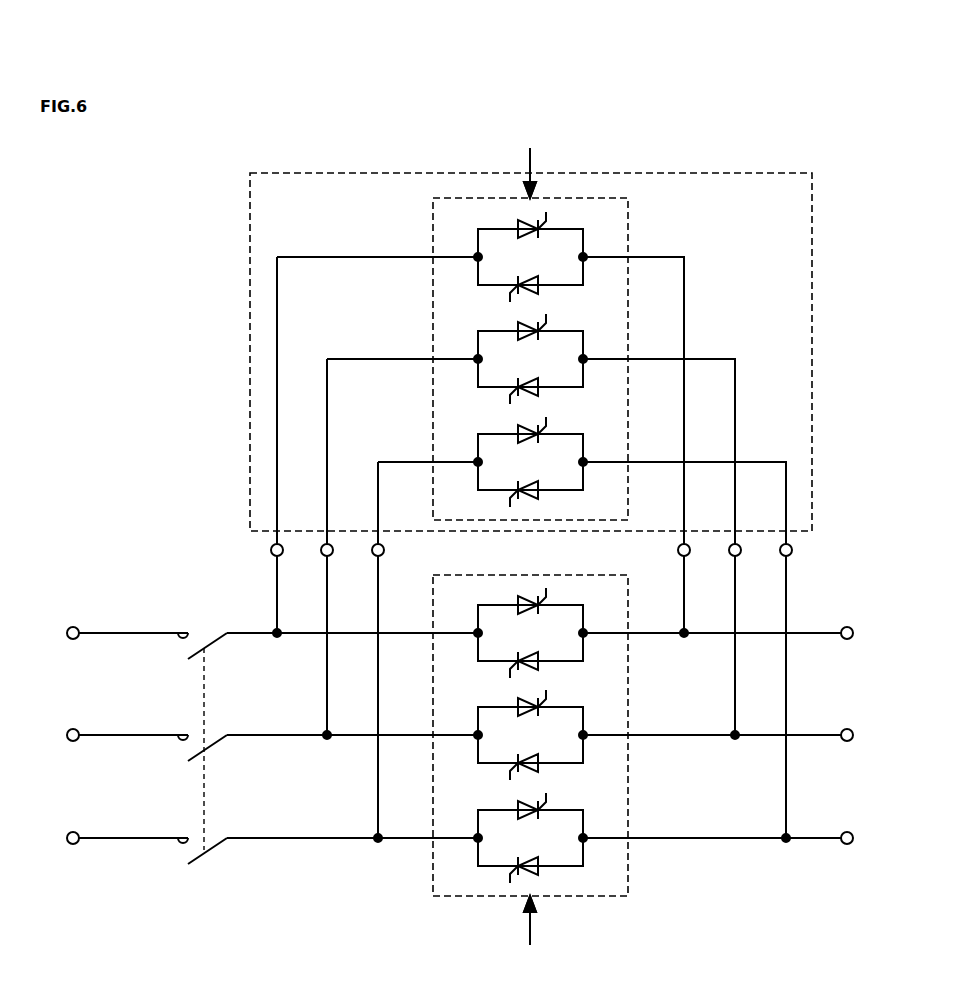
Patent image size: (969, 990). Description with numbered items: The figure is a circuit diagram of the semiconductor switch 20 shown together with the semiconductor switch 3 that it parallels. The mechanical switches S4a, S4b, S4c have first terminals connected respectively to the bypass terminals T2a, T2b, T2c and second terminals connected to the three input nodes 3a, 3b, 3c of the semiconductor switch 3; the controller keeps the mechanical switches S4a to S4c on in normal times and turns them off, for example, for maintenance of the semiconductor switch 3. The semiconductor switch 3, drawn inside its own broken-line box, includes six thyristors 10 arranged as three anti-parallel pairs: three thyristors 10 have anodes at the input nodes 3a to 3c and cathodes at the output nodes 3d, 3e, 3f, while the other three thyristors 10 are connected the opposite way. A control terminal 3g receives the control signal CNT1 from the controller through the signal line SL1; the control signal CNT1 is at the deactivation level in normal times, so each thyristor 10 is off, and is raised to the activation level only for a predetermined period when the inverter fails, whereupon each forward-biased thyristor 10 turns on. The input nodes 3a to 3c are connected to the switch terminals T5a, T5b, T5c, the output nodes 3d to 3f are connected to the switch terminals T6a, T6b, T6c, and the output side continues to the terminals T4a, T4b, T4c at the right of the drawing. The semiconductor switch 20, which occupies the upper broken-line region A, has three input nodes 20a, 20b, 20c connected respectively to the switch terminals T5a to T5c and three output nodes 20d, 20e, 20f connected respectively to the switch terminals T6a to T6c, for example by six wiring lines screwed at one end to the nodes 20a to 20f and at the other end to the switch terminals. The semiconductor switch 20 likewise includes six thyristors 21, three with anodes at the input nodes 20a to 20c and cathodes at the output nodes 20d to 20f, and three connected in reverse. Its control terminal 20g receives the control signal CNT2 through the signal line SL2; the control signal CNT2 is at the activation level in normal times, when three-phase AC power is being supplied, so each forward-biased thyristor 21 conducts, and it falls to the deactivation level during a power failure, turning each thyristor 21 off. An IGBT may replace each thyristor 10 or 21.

The switching unit A is at (812, 352).
The semiconductor switch 20 is at (432, 219).
The thyristor 21 is at (520, 232).
The input node 20a is at (433, 259).
The input node 20b is at (433, 361).
The input node 20c is at (433, 464).
The output node 20d is at (628, 257).
The output node 20e is at (628, 359).
The output node 20f is at (628, 462).
The control terminal 20g is at (533, 197).
The semiconductor switch 3 is at (530, 575).
The thyristor 10 is at (520, 608).
The input node 3a is at (433, 632).
The input node 3b is at (433, 734).
The input node 3c is at (433, 837).
The output node 3d is at (630, 636).
The output node 3e is at (630, 738).
The output node 3f is at (630, 841).
The control terminal 3g is at (528, 900).
The bypass terminal T2a is at (76, 640).
The bypass terminal T2b is at (76, 742).
The bypass terminal T2c is at (76, 845).
The output terminal T4a is at (848, 640).
The output terminal T4b is at (848, 742).
The output terminal T4c is at (848, 845).
The switch terminal T5a is at (271, 557).
The switch terminal T5b is at (321, 557).
The switch terminal T5c is at (372, 557).
The switch terminal T6a is at (678, 557).
The switch terminal T6b is at (729, 557).
The switch terminal T6c is at (780, 557).
The mechanical switch S4a is at (218, 642).
The mechanical switch S4b is at (218, 744).
The mechanical switch S4c is at (218, 847).
The signal line SL1 is at (532, 925).
The signal line SL2 is at (528, 162).
The control signal CNT1 is at (526, 962).
The control signal CNT2 is at (526, 136).